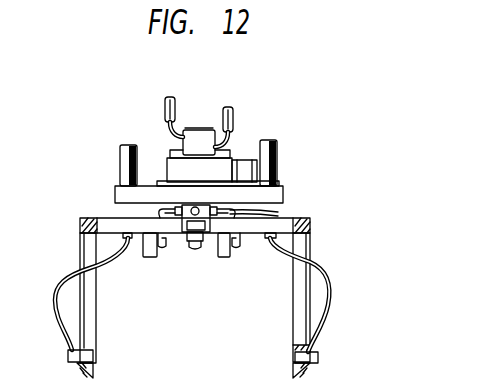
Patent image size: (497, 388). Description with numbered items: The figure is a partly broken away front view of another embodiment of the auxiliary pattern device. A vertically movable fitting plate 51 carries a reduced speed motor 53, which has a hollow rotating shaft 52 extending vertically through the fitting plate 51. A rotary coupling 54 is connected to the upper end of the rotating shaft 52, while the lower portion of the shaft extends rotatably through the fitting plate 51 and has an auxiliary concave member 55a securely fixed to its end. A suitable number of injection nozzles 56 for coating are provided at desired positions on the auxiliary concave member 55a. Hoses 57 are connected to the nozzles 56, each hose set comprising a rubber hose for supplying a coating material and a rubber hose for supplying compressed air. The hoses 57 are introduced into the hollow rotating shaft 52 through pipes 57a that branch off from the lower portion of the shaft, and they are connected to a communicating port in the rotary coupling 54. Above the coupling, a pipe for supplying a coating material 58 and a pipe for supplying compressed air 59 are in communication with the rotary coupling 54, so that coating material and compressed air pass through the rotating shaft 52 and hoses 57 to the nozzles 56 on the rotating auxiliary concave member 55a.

The fitting plate 51 is at (282, 192).
The hollow rotating shaft 52 is at (190, 203).
The reduced speed motor 53 is at (170, 165).
The rotary coupling 54 is at (202, 137).
The auxiliary concave member 55a is at (312, 225).
The injection nozzles 56 is at (318, 357).
The hoses 57 is at (330, 276).
The pipes 57a is at (277, 213).
The pipe for supplying a coating material 58 is at (234, 113).
The pipe for supplying compressed air 59 is at (166, 101).